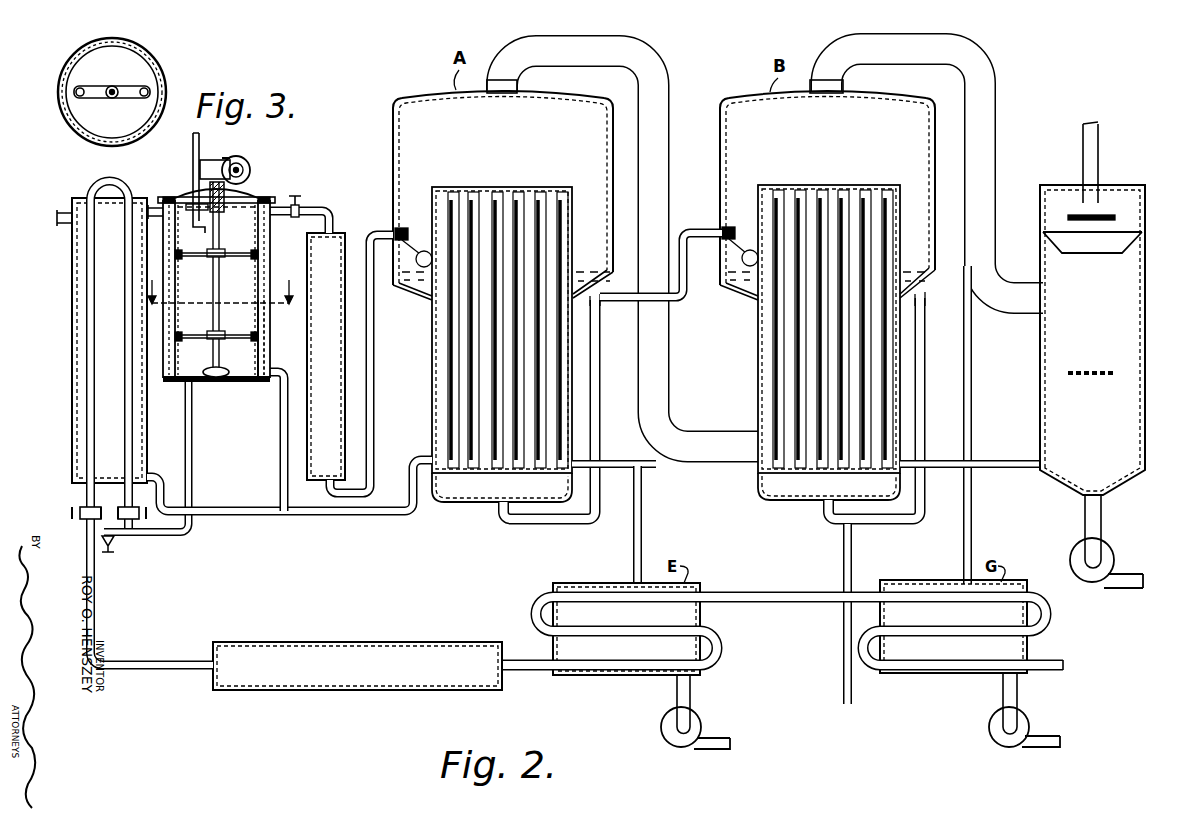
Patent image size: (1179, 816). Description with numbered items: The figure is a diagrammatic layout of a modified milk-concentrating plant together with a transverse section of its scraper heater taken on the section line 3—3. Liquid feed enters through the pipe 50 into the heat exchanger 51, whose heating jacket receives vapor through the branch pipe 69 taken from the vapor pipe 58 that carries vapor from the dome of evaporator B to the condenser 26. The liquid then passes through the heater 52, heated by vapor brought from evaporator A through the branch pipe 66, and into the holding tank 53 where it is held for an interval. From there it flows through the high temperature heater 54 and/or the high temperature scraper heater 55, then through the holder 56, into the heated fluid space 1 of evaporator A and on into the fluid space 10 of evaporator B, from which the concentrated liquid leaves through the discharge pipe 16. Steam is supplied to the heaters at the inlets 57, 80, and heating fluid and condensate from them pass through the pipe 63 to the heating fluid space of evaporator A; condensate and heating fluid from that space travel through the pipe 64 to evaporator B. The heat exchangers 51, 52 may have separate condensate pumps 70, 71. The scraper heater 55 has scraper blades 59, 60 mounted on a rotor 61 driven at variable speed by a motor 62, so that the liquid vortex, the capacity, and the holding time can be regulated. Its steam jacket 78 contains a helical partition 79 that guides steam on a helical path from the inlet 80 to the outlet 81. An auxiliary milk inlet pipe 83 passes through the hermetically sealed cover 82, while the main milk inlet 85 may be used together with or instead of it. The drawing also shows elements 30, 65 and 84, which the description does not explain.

In FIG. 2, the heated fluid space 1 is at (421, 153).
In FIG. 2, the section line 3 is at (281, 248).
In FIG. 2, the fluid space 10 is at (746, 160).
In FIG. 2, the discharge pipe 16 is at (843, 673).
In FIG. 2, the condenser 26 is at (1145, 360).
In FIG. 2, the separator outlet elbow 30 is at (1112, 568).
In FIG. 2, the feed pipe 50 is at (1058, 658).
In FIG. 2, the heat exchanger 51 is at (953, 675).
In FIG. 2, the heater 52 is at (634, 677).
In FIG. 2, the holding tank 53 is at (327, 642).
In FIG. 2, the high temperature heater 54 is at (72, 379).
In FIG. 2, the high temperature scraper heater 55 is at (222, 270).
In FIG. 2, the holder 56 is at (328, 441).
In FIG. 2, the steam inlet 57 is at (62, 224).
In FIG. 2, the vapor pipe 58 is at (987, 182).
In FIG. 3, the vapor pipe 58 is at (98, 118).
In FIG. 2, the scraper blade 59 is at (180, 385).
In FIG. 3, the scraper blade 59 is at (76, 89).
In FIG. 2, the scraper blade 60 is at (248, 385).
In FIG. 3, the scraper blade 60 is at (149, 99).
In FIG. 2, the rotor 61 is at (217, 306).
In FIG. 3, the rotor 61 is at (136, 86).
In FIG. 2, the motor 62 is at (250, 168).
In FIG. 2, the pipe 63 is at (330, 516).
In FIG. 2, the pipe 64 is at (652, 476).
In FIG. 2, the vapor pipe 65 is at (656, 366).
In FIG. 2, the branch pipe 66 is at (642, 553).
In FIG. 2, the branch pipe 69 is at (970, 550).
In FIG. 2, the condensate pump 70 is at (695, 738).
In FIG. 2, the condensate pump 71 is at (1026, 737).
In FIG. 2, the steam jacket 78 is at (266, 320).
In FIG. 2, the helical partition 79 is at (266, 342).
In FIG. 2, the steam inlet 80 is at (153, 207).
In FIG. 2, the outlet 81 is at (288, 381).
In FIG. 2, the hermetically sealed cover 82 is at (246, 181).
In FIG. 2, the auxiliary milk inlet pipe 83 is at (200, 151).
In FIG. 2, the bracket 84 is at (203, 230).
In FIG. 2, the main milk inlet 85 is at (190, 447).